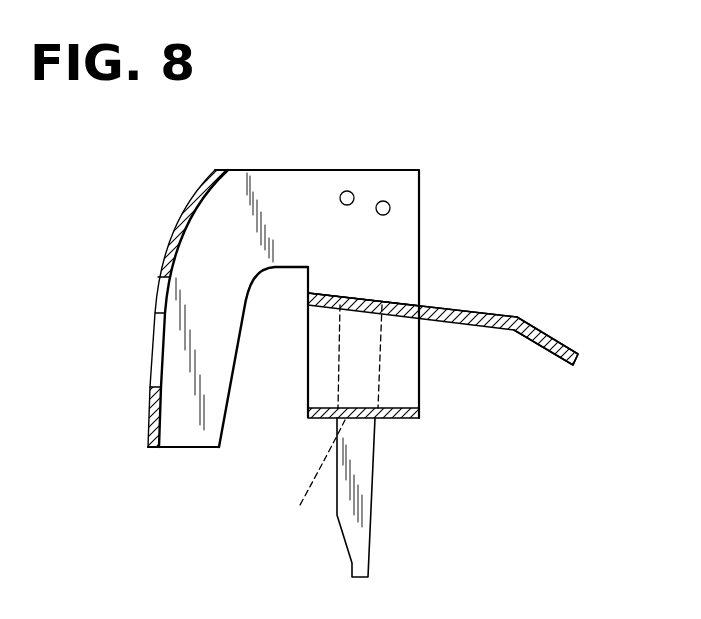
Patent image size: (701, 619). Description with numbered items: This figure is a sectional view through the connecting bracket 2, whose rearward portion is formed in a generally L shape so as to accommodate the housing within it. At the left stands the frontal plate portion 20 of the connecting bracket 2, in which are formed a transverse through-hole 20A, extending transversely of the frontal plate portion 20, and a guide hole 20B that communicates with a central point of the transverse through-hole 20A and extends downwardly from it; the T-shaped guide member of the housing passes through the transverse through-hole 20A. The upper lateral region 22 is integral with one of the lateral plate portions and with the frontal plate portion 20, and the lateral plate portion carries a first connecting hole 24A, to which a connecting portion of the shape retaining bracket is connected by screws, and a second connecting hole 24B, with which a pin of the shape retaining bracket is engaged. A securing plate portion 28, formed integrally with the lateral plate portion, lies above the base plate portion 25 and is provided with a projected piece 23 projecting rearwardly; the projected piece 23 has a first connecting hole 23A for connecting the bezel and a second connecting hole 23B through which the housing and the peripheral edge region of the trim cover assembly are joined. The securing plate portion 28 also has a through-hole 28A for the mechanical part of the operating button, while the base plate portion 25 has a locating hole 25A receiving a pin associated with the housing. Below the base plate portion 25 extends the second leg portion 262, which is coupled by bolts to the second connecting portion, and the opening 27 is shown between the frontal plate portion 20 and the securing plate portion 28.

The connecting bracket 2 is at (160, 190).
The frontal plate portion 20 is at (168, 236).
The transverse through-hole 20A is at (160, 297).
The guide hole 20B is at (155, 351).
The upper lateral region 22 is at (278, 188).
The first connecting hole 24A is at (390, 208).
The second connecting hole 24B is at (347, 191).
The projected piece 23 is at (476, 317).
The first connecting hole 23A is at (448, 322).
The second connecting hole 23B is at (548, 332).
The through-hole 28A is at (378, 305).
The securing plate portion 28 is at (333, 307).
The opening / recess 27 is at (308, 383).
The base plate portion 25 is at (395, 420).
The locating hole 25A is at (297, 468).
The second leg portion 262 is at (363, 478).